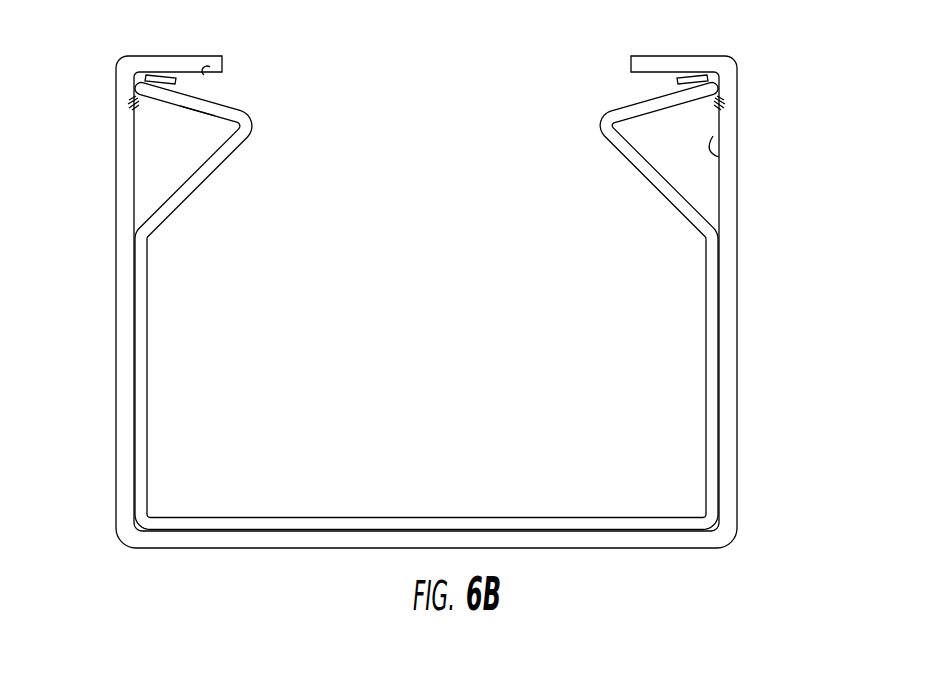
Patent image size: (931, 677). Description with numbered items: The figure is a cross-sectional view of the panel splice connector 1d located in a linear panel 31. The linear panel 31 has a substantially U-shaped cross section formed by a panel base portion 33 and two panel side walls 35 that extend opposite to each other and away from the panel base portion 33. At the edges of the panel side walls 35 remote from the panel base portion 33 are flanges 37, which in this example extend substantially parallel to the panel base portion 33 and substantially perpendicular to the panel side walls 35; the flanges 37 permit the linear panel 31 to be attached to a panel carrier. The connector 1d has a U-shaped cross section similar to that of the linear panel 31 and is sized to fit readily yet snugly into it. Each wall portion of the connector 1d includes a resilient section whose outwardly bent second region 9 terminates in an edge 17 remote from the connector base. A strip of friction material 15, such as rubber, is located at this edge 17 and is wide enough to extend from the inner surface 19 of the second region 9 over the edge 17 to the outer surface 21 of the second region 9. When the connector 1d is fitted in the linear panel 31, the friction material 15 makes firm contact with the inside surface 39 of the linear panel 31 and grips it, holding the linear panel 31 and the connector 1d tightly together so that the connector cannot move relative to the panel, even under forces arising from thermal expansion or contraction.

The panel splice connector 1d is at (713, 326).
The second region 9 is at (633, 94).
The friction material 15 is at (131, 103).
The edge 17 is at (136, 83).
The inner surface 19 is at (228, 107).
The outer surface 21 is at (213, 117).
The linear panel 31 is at (451, 299).
The panel base portion 33 is at (556, 545).
The panel side walls 35 is at (727, 408).
The flanges 37 is at (184, 64).
The inside surface 39 is at (204, 75).